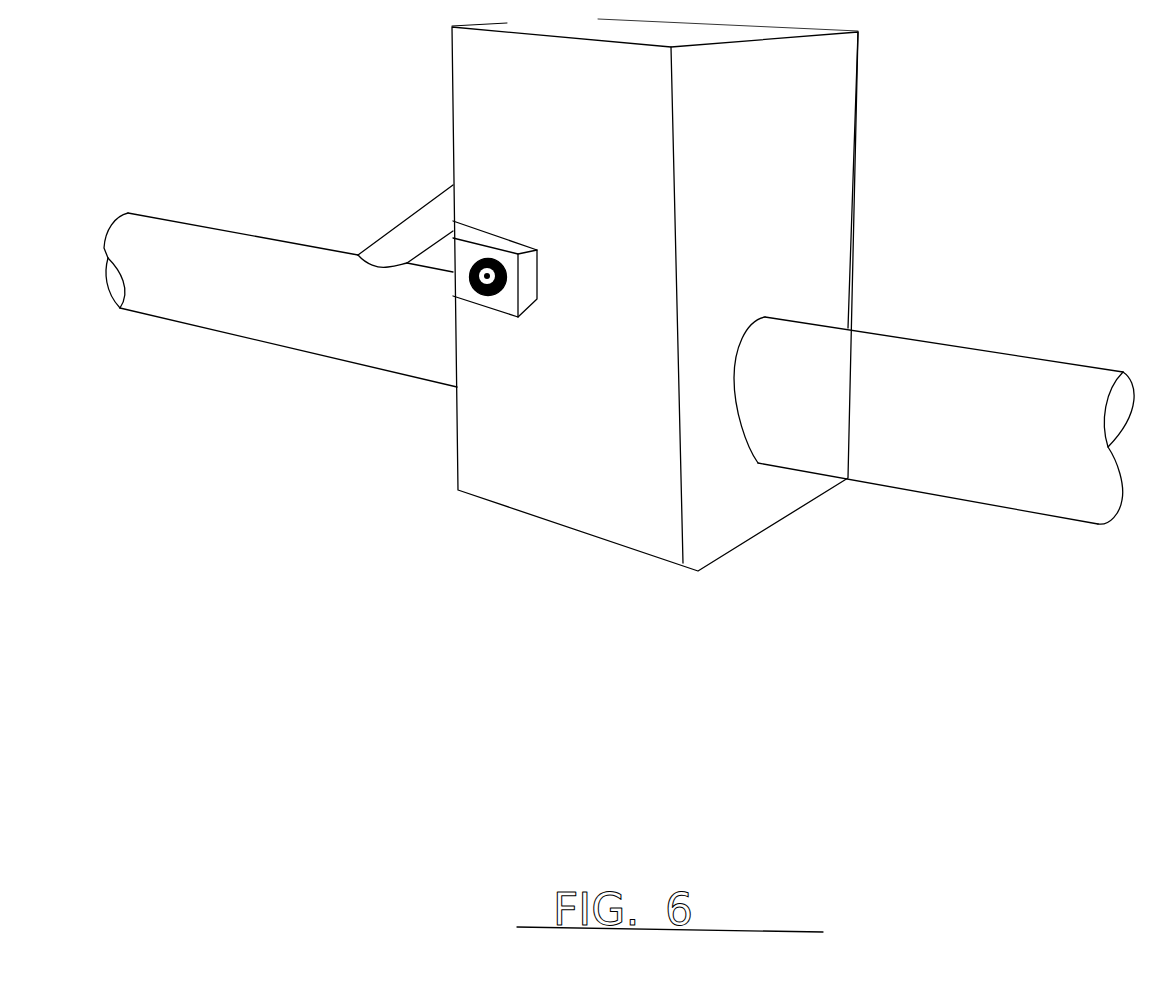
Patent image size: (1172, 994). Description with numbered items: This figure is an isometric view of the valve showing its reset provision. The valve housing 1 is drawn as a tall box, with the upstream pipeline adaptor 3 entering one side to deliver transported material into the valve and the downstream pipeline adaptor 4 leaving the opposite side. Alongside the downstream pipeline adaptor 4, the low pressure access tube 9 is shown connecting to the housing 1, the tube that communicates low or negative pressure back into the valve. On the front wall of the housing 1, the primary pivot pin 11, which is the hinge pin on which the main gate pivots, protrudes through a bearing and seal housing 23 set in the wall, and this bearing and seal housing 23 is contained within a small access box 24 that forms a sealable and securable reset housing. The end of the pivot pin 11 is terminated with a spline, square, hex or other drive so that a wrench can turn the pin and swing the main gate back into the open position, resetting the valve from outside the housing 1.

The housing 1 is at (808, 198).
The upstream pipeline adaptor 3 is at (919, 376).
The downstream pipeline adaptor 4 is at (245, 324).
The low pressure access tube 9 is at (426, 216).
The hinge pin 11 is at (490, 305).
The bearing and seal housing 23 is at (507, 300).
The access box 24 is at (533, 278).